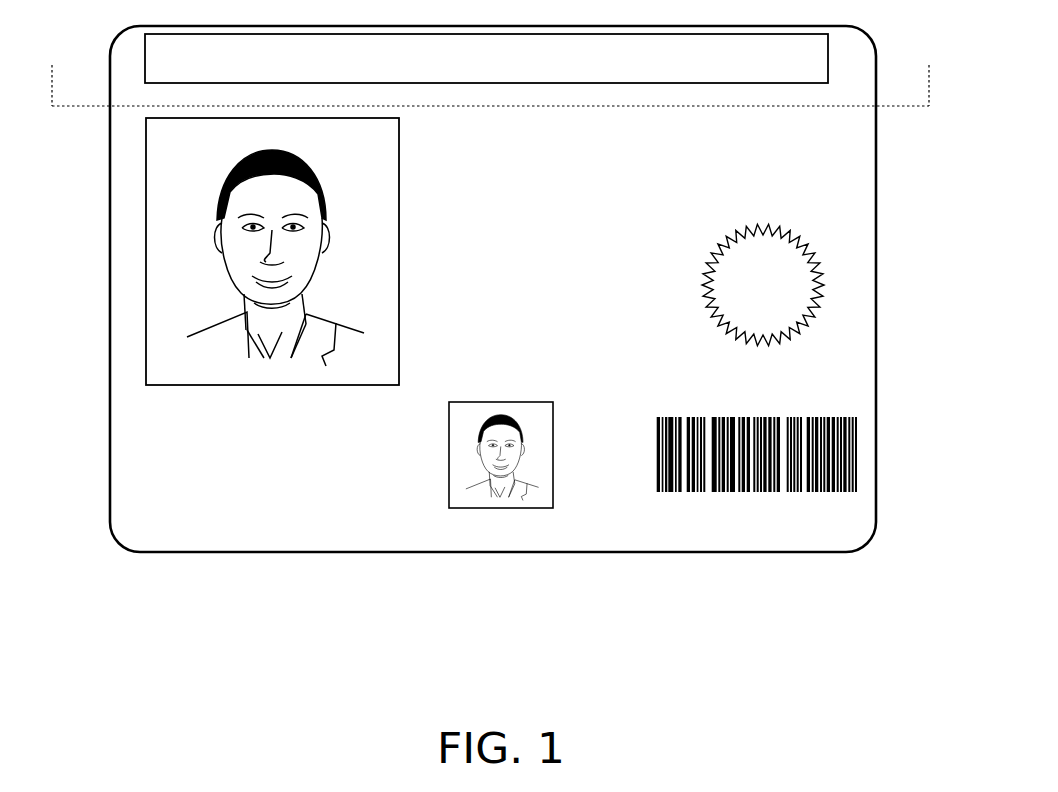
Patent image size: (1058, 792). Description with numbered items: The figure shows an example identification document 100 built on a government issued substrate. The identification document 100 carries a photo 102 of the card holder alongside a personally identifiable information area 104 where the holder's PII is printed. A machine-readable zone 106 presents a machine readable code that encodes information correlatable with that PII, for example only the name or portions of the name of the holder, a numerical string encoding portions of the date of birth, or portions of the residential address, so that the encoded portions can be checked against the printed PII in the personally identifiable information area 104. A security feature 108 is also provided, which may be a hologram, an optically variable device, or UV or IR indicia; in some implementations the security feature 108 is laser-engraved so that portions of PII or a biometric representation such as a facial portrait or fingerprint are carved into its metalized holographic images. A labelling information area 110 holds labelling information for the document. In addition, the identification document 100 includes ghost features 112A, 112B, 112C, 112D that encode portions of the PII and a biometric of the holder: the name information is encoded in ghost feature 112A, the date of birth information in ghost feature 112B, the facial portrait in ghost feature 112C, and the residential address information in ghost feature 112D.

The identification document 100 is at (268, 582).
The photo 102 is at (146, 293).
The personally identifiable information area 104 is at (524, 146).
The machine-readable zone 106 is at (715, 417).
The security feature 108 is at (757, 342).
The labelling information area 110 is at (488, 70).
The ghost feature 112A is at (212, 522).
The ghost feature 112B is at (493, 542).
The ghost feature 112C is at (556, 487).
The ghost feature 112D is at (782, 136).